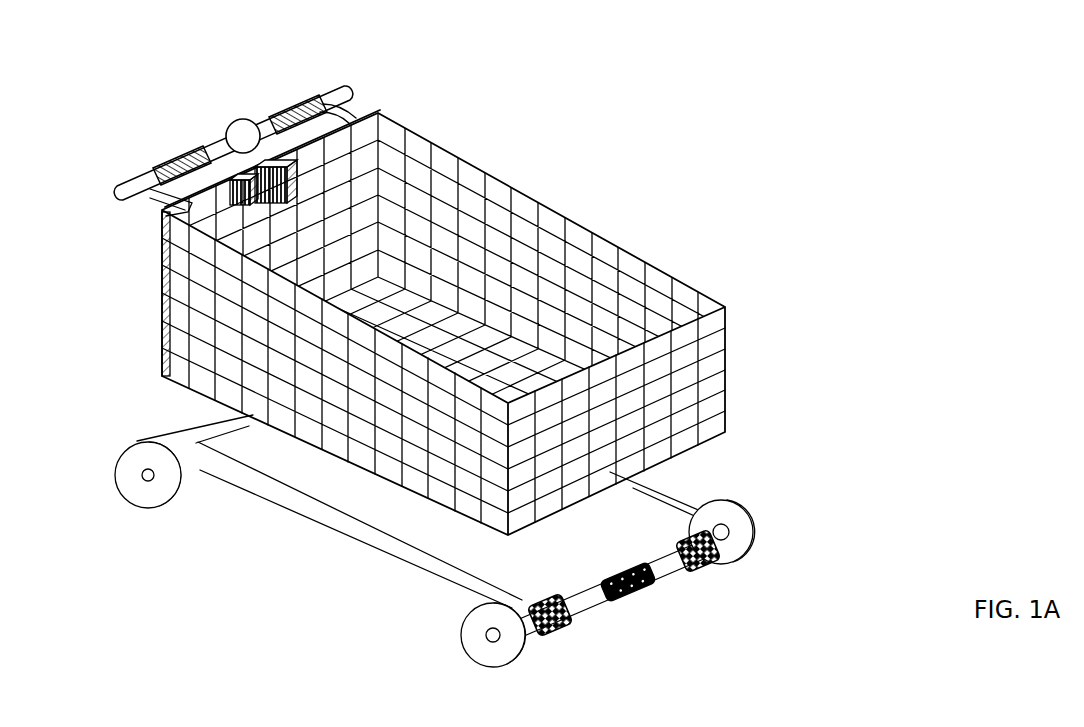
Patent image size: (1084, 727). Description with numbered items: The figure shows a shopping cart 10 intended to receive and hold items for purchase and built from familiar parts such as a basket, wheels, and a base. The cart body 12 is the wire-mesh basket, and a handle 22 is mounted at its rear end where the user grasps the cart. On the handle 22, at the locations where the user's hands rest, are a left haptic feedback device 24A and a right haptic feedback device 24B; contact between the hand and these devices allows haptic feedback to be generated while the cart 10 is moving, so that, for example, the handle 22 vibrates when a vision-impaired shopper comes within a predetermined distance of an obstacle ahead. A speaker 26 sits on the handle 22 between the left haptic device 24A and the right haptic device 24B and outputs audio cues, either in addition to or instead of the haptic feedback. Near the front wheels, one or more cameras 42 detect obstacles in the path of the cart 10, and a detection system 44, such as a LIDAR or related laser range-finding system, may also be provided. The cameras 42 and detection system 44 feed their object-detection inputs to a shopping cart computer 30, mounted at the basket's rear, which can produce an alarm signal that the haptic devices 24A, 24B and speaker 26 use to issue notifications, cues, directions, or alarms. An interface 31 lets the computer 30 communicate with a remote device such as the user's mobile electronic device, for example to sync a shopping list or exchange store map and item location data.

The shopping cart 10 is at (591, 104).
The cart body 12 is at (617, 247).
The handle 22 is at (330, 90).
The left haptic feedback device 24A is at (173, 158).
The right haptic feedback device 24B is at (283, 110).
The speaker 26 is at (237, 118).
The shopping cart computer 30 is at (303, 160).
The interface 31 is at (300, 165).
The camera 42 is at (562, 630).
The detection system 44 is at (643, 587).